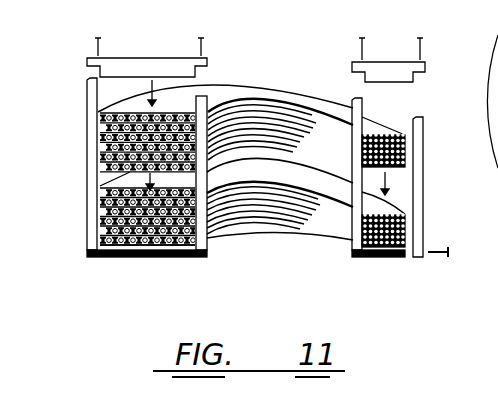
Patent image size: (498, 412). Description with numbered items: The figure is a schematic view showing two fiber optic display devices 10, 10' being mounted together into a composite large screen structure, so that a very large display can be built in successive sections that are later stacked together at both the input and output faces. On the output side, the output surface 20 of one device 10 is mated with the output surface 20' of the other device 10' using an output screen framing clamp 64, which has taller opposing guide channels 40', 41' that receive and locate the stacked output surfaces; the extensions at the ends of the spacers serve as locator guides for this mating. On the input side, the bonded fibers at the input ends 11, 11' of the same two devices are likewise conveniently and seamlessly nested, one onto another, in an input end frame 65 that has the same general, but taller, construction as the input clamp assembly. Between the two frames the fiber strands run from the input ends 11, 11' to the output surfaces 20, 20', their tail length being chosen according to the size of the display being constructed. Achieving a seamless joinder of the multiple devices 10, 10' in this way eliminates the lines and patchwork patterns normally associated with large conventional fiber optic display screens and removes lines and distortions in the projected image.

The device 10 is at (280, 252).
The device 10' is at (251, 78).
The output surface 20 is at (125, 263).
The output surface 20' is at (124, 142).
The guide channel 40' is at (123, 213).
The guide channel 41' is at (278, 193).
The output screen framing clamp 64 is at (182, 259).
The input end frame 65 is at (372, 260).
The input end 11 is at (410, 227).
The input end 11' is at (413, 150).